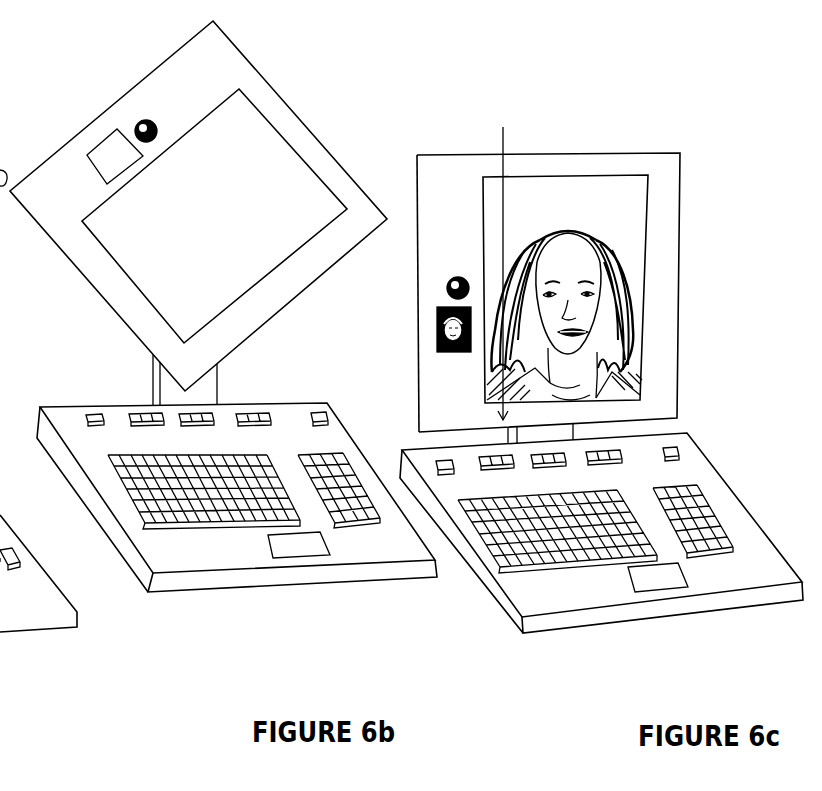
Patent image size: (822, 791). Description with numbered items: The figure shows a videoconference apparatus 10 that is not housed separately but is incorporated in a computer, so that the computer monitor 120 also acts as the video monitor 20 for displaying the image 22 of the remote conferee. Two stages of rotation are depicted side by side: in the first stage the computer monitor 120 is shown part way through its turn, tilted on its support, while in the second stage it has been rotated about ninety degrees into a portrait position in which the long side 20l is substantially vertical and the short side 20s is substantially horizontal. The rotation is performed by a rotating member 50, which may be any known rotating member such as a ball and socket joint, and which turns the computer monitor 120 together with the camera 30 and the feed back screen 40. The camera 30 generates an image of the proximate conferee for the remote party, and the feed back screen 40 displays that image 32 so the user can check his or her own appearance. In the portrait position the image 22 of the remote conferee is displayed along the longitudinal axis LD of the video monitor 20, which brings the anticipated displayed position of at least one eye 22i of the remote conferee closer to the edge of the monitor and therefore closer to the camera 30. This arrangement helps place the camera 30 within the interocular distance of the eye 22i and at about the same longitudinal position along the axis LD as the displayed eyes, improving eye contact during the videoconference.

In FIG. 6C, the videoconference apparatus 10 is at (573, 80).
In FIG. 6C, the video monitor 20 is at (564, 264).
In FIG. 6C, the long side 20l is at (477, 200).
In FIG. 6C, the short side 20s is at (567, 167).
In FIG. 6C, the longitudinal axis LD is at (505, 258).
In FIG. 6C, the image of the remote conferee 22 is at (634, 281).
In FIG. 6C, the eye of the image of the remote conferee 22i is at (562, 288).
In FIG. 6C, the camera 30 is at (443, 293).
In FIG. 6C, the feed back screen 40 is at (409, 343).
In FIG. 6C, the image of the proximate conferee 32 is at (438, 337).
In FIG. 6C, the computer monitor 120 is at (658, 368).
In FIG. 6B, the rotating member 50 is at (148, 380).